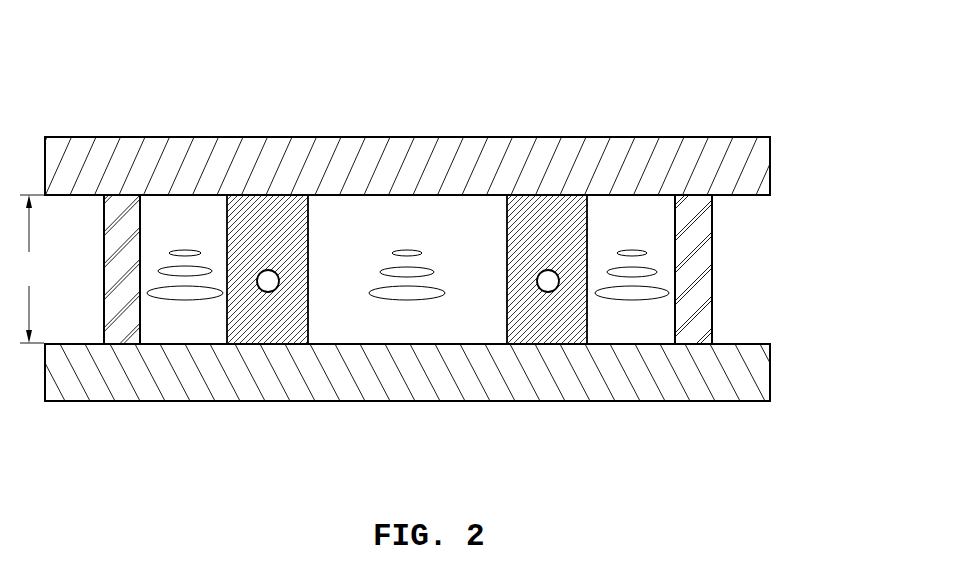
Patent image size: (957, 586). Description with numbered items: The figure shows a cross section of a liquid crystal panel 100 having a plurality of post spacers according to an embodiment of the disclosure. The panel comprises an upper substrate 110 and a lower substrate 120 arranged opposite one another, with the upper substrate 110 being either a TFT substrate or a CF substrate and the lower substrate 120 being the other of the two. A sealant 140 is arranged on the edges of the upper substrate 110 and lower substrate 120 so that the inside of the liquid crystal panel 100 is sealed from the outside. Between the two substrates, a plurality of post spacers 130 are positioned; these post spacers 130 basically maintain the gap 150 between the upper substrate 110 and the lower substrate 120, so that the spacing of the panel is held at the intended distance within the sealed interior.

The liquid crystal panel 100 is at (178, 78).
The upper substrate 110 is at (769, 162).
The lower substrate 120 is at (769, 370).
The post spacer 130 is at (577, 272).
The sealant 140 is at (702, 235).
The gap 150 is at (33, 269).